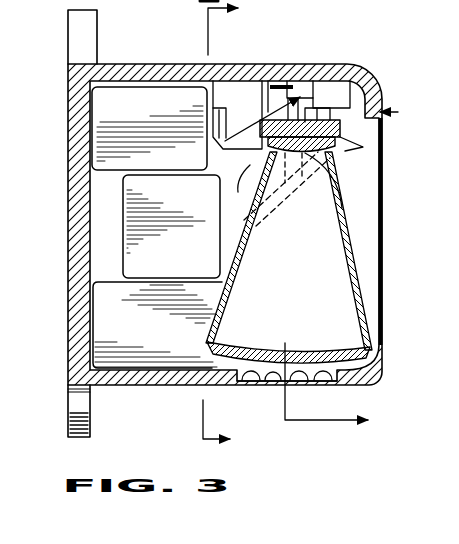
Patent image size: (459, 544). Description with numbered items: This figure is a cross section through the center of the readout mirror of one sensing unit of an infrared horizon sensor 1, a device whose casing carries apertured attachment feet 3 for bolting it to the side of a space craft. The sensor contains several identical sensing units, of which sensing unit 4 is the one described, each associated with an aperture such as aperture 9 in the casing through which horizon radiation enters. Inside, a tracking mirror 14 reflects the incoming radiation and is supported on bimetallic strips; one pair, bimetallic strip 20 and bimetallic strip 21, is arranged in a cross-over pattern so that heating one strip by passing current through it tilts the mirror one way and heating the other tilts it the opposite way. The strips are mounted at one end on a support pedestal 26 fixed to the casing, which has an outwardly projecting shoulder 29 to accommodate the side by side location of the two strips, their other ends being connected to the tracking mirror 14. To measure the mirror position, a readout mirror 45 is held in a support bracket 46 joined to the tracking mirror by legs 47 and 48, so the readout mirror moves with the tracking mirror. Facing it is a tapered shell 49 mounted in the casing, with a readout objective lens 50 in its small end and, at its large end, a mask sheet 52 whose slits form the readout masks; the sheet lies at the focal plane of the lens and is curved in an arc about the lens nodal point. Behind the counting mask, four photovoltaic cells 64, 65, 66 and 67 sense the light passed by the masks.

The infrared horizon sensor 1 is at (374, 61).
The attachment feet 3 is at (90, 28).
The sensing unit 4 is at (210, 230).
The aperture 9 is at (354, 263).
The tracking mirror 14 is at (350, 160).
The bimetallic strip 20 is at (228, 158).
The bimetallic strip 21 is at (301, 92).
The support pedestal 26 is at (233, 87).
The outwardly projecting shoulder 29 is at (267, 97).
The readout mirror 45 is at (337, 151).
The support bracket 46 is at (322, 119).
The leg 47 is at (238, 232).
The leg 48 is at (340, 137).
The tapered shell 49 is at (352, 248).
The readout objective lens 50 is at (345, 213).
The mask sheet 52 is at (265, 352).
The photovoltaic cell 64 is at (243, 377).
The photovoltaic cell 65 is at (272, 378).
The photovoltaic cell 66 is at (305, 378).
The photovoltaic cell 67 is at (334, 378).